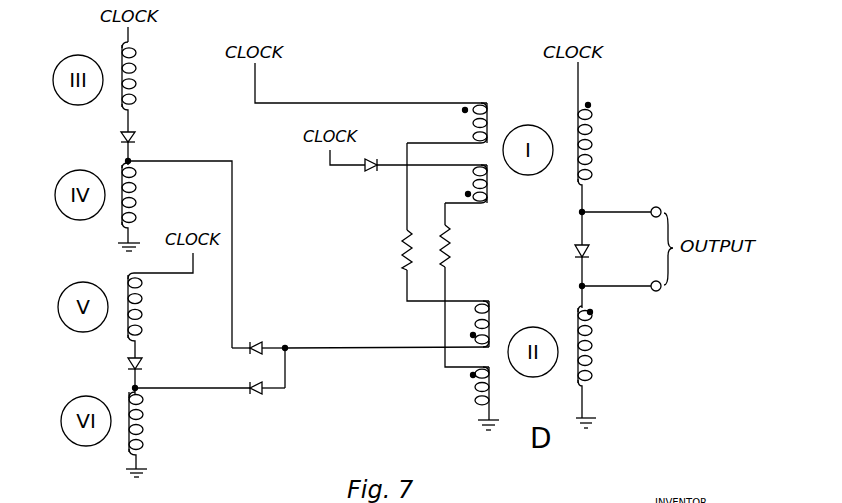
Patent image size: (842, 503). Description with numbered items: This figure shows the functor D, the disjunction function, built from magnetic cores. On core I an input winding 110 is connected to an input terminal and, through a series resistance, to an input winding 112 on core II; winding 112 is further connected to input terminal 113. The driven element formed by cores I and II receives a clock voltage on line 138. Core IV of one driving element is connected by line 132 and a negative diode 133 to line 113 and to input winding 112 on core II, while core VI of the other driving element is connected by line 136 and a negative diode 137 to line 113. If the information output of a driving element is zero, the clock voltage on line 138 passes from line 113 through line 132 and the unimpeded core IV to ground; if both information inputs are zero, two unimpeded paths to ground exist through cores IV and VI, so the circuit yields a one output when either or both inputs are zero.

The input winding 110 is at (490, 112).
The input winding 112 is at (493, 311).
The input terminal 113 is at (373, 350).
The line 132 is at (234, 249).
The negative diode 133 is at (252, 340).
The line 136 is at (178, 393).
The negative diode 137 is at (257, 393).
The line 138 is at (258, 93).